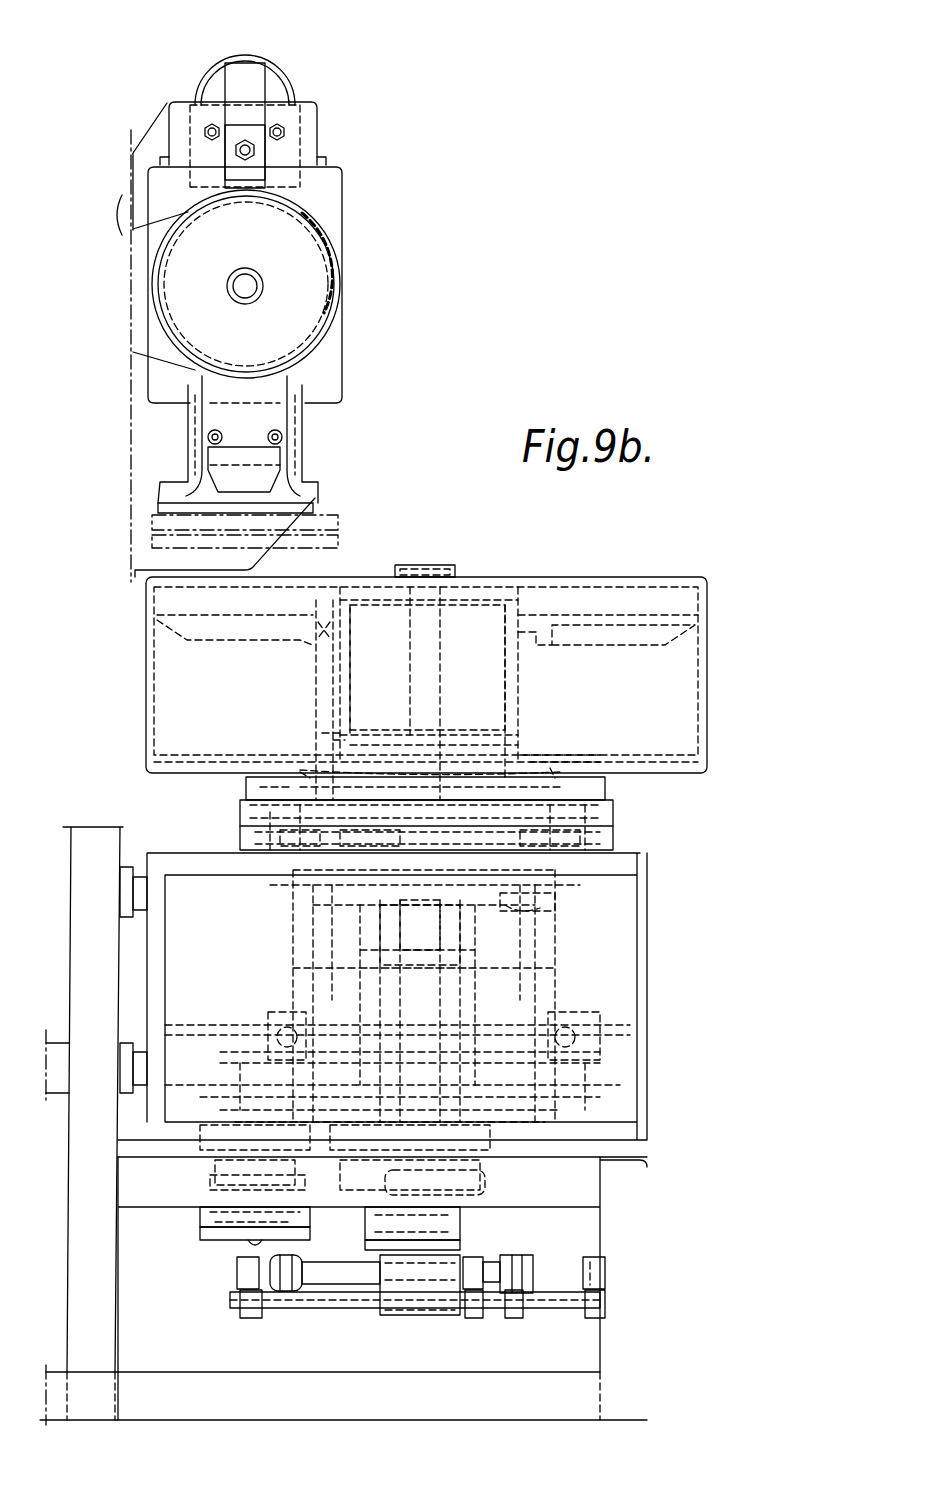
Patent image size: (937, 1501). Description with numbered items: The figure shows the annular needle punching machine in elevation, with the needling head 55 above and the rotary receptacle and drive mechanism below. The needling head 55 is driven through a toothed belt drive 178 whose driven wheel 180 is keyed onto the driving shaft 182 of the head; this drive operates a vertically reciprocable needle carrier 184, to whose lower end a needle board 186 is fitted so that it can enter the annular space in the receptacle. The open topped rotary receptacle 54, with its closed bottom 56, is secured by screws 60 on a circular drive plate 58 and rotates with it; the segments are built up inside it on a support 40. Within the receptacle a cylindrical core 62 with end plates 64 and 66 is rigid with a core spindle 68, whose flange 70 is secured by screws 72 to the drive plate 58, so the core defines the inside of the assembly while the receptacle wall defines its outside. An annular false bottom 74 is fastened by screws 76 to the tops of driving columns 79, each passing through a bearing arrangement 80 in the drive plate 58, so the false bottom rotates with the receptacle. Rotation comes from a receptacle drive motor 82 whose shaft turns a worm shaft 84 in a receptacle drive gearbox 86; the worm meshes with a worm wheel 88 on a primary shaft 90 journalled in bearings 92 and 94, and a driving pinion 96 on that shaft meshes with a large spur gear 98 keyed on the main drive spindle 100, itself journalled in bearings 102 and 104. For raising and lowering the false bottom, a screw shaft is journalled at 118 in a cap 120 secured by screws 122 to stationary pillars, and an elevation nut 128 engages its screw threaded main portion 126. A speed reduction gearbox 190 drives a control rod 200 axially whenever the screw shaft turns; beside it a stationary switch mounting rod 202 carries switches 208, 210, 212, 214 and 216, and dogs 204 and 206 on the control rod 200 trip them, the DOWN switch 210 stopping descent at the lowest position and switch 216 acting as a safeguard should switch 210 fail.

The support 40 is at (612, 595).
The rotary receptacle 54 is at (708, 688).
The needling head 55 is at (341, 441).
The closed bottom 56 is at (662, 775).
The drive plate 58 is at (613, 795).
The screws 60 is at (585, 752).
The cylindrical core 62 is at (520, 685).
The end plate 64 is at (485, 585).
The end plate 66 is at (478, 722).
The core spindle 68 is at (418, 695).
The flange 70 is at (430, 749).
The screws 72 is at (322, 733).
The annular false bottom 74 is at (630, 650).
The screws 76 is at (322, 612).
The driving columns 79 is at (313, 695).
The bearing arrangement 80 is at (305, 770).
The receptacle drive motor 82 is at (322, 1180).
The worm shaft 84 is at (305, 1215).
The receptacle drive gearbox 86 is at (195, 1225).
The worm wheel 88 is at (190, 1222).
The primary shaft 90 is at (228, 1112).
The bearing 92 is at (225, 1095).
The bearing 94 is at (230, 1158).
The driving pinion 96 is at (235, 1065).
The spur gear 98 is at (640, 1095).
The main drive spindle 100 is at (292, 982).
The bearing 102 is at (245, 840).
The bearing 104 is at (270, 1025).
The journal 118 is at (560, 903).
The cap 120 is at (628, 840).
The screws 122 is at (372, 843).
The screw threaded main portion 126 is at (440, 1010).
The elevation nut 128 is at (390, 1030).
The toothed belt drive 178 is at (147, 213).
The driven wheel 180 is at (330, 290).
The driving shaft 182 is at (247, 295).
The needle carrier 184 is at (305, 483).
The needle board 186 is at (340, 540).
The speed reduction gearbox 190 is at (455, 1250).
The control rod 200 is at (338, 1280).
The switch mounting rod 202 is at (290, 1302).
The dog 204 is at (338, 1300).
The dog 206 is at (520, 1258).
The switch 208 is at (232, 1290).
The DOWN switch 210 is at (300, 1275).
The switch 212 is at (473, 1295).
The switch 214 is at (523, 1300).
The switch 216 is at (597, 1290).